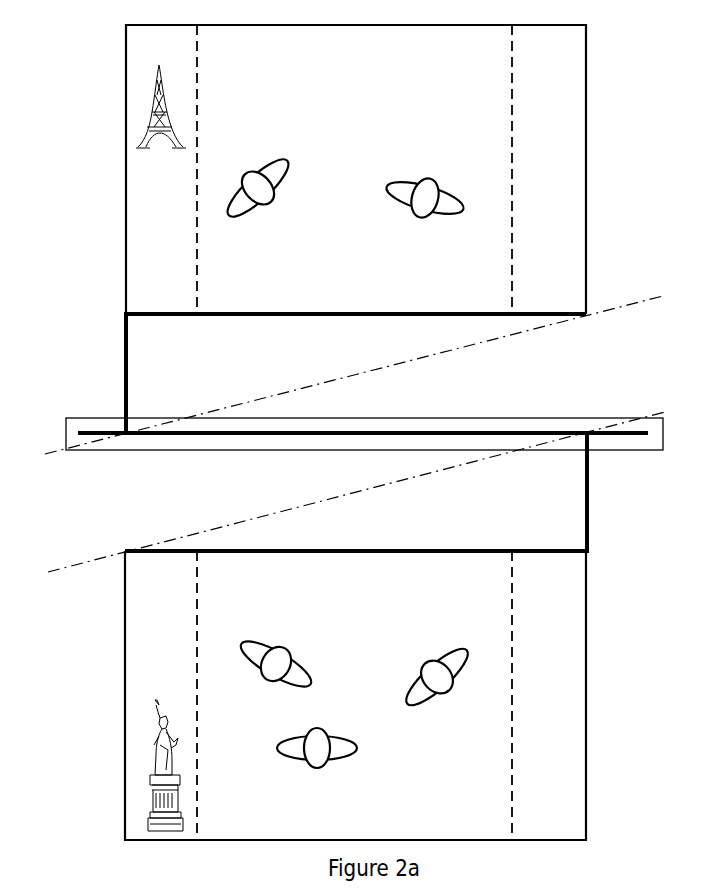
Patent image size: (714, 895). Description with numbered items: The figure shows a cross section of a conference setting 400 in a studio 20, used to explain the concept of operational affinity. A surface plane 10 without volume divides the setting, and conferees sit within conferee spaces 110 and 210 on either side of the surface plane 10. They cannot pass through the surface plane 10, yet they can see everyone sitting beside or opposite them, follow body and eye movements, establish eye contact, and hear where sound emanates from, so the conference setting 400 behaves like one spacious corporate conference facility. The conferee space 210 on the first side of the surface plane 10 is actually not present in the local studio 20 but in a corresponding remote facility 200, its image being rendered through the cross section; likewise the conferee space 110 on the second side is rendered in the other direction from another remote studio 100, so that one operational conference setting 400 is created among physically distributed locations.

The surface plane 10 is at (476, 433).
The studio 20 is at (160, 451).
The remote studio 100 is at (355, 695).
The conferee space 110 is at (355, 715).
The remote facility 200 is at (358, 169).
The conferee space 210 is at (342, 148).
The conference setting 400 is at (197, 221).